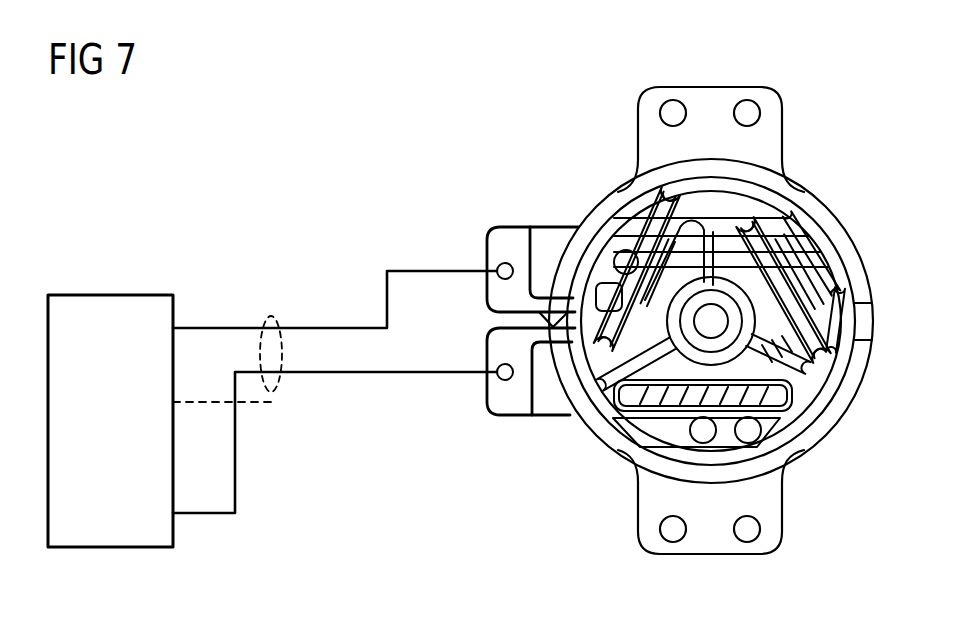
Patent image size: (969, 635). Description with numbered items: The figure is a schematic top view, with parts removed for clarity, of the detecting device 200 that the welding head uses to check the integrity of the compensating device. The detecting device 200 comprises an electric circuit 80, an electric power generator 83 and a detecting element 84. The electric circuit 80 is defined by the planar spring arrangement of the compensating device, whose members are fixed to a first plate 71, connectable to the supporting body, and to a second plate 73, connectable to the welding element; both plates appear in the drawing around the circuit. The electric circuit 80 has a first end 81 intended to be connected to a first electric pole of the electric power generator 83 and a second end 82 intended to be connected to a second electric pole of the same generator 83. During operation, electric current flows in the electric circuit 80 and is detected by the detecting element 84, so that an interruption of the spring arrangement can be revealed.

The detecting device 200 is at (366, 182).
The electric circuit 80 is at (613, 178).
The first plate 71 is at (765, 500).
The second plate 73 is at (570, 252).
The second end 82 is at (497, 240).
The first end 81 is at (497, 399).
The electric power generator 83 is at (110, 292).
The detecting element 84 is at (270, 312).